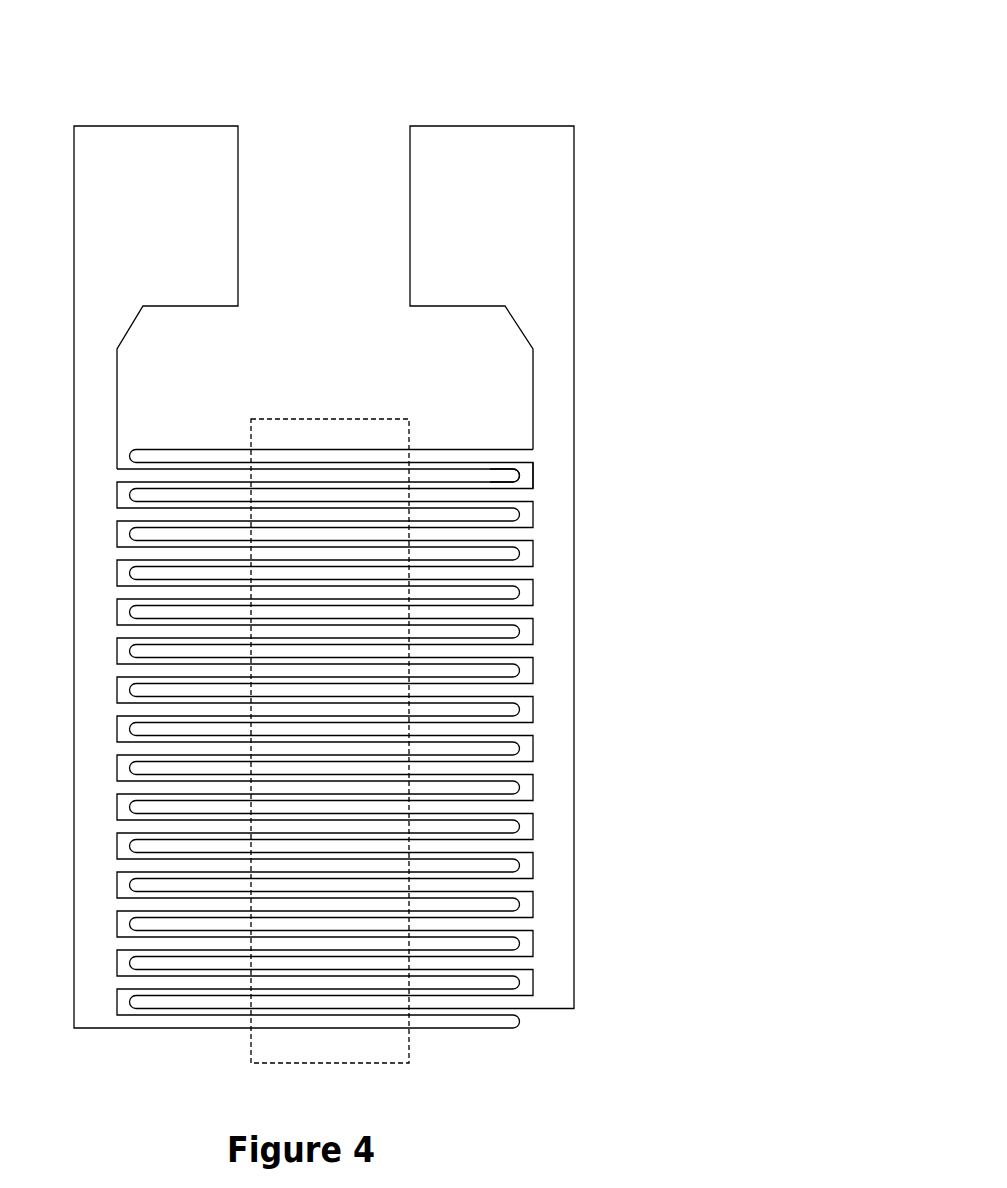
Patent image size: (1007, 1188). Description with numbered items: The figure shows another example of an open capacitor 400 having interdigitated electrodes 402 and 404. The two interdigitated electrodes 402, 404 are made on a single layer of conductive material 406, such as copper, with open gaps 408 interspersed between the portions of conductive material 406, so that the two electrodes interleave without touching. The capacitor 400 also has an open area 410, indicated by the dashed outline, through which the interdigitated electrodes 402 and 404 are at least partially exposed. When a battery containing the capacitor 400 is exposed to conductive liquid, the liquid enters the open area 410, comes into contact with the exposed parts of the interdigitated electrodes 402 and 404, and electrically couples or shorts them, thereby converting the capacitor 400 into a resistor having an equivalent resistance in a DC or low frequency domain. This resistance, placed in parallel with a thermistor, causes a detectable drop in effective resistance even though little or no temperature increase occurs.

The open capacitor 400 is at (562, 78).
The interdigitated electrode 402 is at (185, 233).
The interdigitated electrode 404 is at (502, 233).
The conductive material 406 is at (176, 457).
The open gap 408 is at (522, 473).
The open area 410 is at (409, 1060).